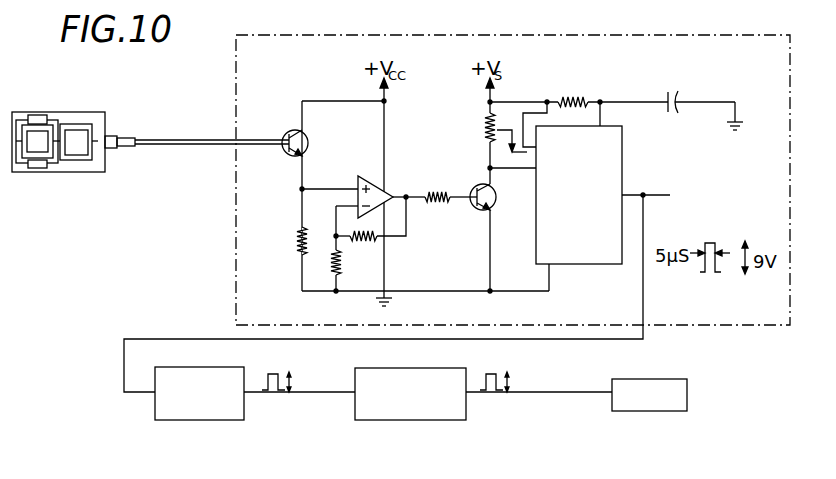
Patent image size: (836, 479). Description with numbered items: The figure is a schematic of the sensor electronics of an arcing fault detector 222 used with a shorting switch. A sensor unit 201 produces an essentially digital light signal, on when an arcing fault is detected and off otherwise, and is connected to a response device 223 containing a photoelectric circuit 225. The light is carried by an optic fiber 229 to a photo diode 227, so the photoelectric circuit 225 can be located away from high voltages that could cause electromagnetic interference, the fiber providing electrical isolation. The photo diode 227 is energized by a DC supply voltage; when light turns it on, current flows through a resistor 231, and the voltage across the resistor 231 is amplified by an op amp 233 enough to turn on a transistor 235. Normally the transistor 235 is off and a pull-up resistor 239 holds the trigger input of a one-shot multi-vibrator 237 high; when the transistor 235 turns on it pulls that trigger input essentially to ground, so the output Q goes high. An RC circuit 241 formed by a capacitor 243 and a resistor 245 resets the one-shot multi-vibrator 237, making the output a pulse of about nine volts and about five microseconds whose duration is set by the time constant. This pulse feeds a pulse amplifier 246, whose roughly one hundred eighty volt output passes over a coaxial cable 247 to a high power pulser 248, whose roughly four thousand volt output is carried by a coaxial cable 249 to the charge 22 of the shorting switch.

The charge 22 is at (650, 412).
The sensor unit 201 is at (77, 174).
The arcing fault detector 222 is at (187, 94).
The response device 223 is at (208, 248).
The photoelectric circuit 225 is at (506, 91).
The photo diode 227 is at (291, 131).
The optic fiber 229 is at (198, 147).
The resistor 231 is at (298, 228).
The op amp 233 is at (364, 175).
The transistor 235 is at (472, 208).
The one-shot multi-vibrator 237 is at (585, 266).
The pull-up resistor 239 is at (482, 136).
The RC circuit 241 is at (635, 95).
The capacitor 243 is at (677, 110).
The resistor 245 is at (572, 95).
The pulse amplifier 246 is at (193, 421).
The coaxial cable 247 is at (338, 394).
The high power pulser 248 is at (424, 421).
The coaxial cable 249 is at (556, 394).